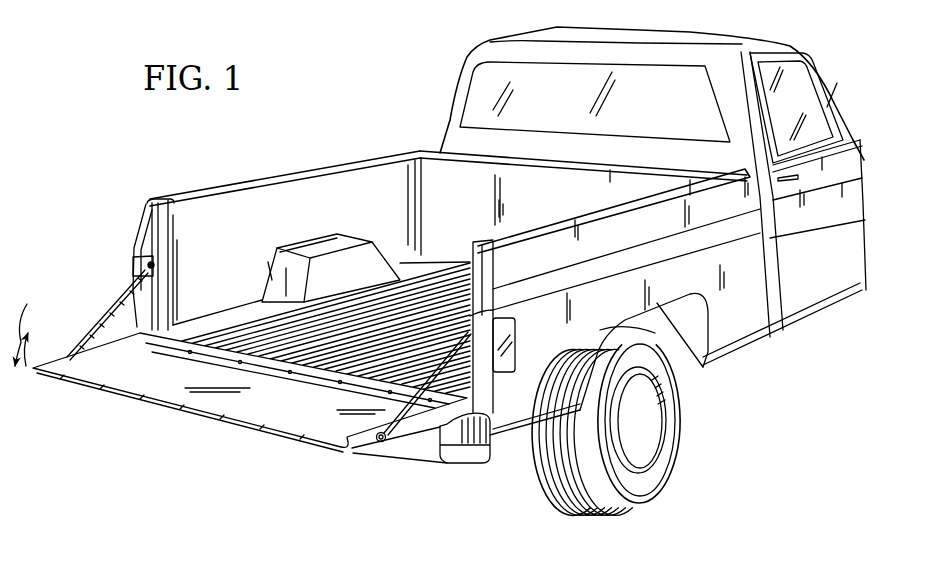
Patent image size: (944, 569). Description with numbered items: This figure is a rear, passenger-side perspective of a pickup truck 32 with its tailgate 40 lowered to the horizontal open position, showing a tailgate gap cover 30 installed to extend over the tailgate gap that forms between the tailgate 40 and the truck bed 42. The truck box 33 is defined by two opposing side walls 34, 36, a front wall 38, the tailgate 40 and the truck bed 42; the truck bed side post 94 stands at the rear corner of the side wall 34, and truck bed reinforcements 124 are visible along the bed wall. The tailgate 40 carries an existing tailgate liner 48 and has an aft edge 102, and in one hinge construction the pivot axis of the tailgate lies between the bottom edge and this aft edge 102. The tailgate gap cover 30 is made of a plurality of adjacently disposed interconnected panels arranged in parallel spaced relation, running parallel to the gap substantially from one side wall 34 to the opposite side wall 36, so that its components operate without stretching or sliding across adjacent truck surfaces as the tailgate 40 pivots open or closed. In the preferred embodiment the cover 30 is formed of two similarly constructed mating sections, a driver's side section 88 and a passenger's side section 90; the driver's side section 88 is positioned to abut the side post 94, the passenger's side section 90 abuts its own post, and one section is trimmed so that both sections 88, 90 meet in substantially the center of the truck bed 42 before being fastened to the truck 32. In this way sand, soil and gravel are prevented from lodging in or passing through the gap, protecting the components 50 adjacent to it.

The tailgate gap cover 30 is at (160, 382).
The pickup truck 32 is at (451, 45).
The truck box 33 is at (358, 128).
The side wall 34 is at (293, 160).
The side wall 36 is at (580, 200).
The front wall 38 is at (452, 132).
The tailgate 40 is at (290, 441).
The truck bed 42 is at (241, 303).
The tailgate liner 48 is at (29, 326).
The tailgate corner 50 is at (33, 372).
The driver's side section 88 is at (190, 378).
The passenger's side section 90 is at (338, 410).
The truck bed side post 94 is at (195, 266).
The aft edge of the tailgate 102 is at (218, 420).
The truck bed reinforcements 124 is at (444, 238).